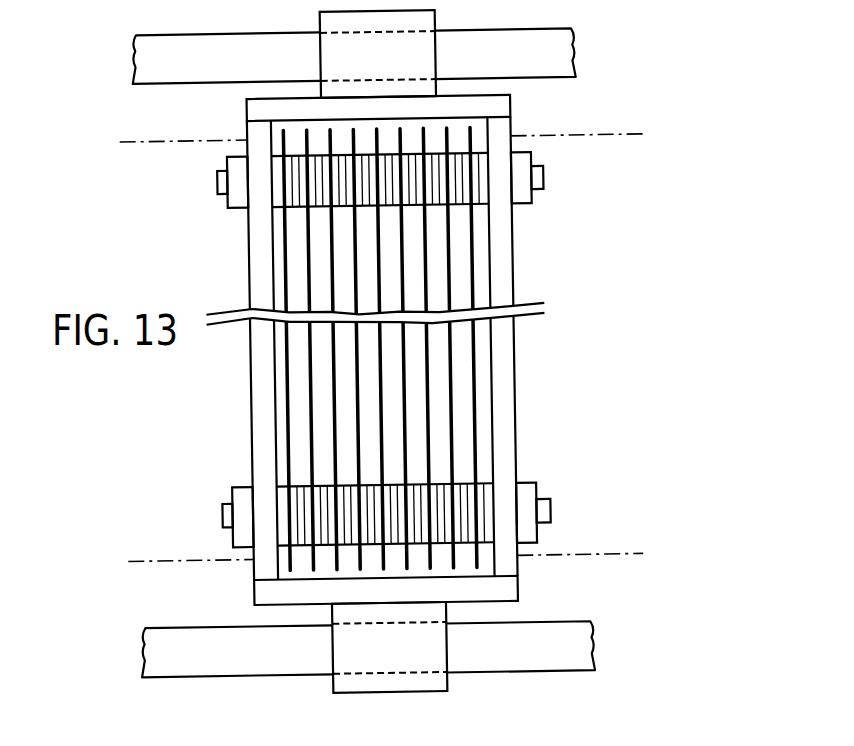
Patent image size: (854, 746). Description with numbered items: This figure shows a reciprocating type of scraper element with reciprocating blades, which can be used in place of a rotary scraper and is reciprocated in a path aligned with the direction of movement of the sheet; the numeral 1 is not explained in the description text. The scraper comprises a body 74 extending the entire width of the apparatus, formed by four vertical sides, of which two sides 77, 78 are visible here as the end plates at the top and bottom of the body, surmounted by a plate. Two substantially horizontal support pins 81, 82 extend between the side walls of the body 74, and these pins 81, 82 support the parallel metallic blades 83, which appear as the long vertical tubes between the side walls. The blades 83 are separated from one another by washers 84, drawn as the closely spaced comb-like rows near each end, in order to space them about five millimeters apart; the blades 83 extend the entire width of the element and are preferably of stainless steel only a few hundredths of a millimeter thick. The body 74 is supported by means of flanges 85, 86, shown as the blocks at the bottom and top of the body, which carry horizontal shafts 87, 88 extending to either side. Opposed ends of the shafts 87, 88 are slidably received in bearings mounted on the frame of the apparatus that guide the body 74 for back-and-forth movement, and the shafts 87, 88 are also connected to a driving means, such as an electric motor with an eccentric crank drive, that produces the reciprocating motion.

The heat exchanger assembly 1 is at (642, 503).
The body 74 is at (510, 397).
The vertical side 77 is at (490, 108).
The vertical side 78 is at (507, 588).
The support pin 81 is at (553, 505).
The support pin 82 is at (543, 177).
The metallic blade 83 is at (477, 267).
The washer 84 is at (290, 195).
The flange 85 is at (432, 683).
The flange 86 is at (412, 47).
The horizontal shaft 87 is at (563, 643).
The horizontal shaft 88 is at (532, 63).